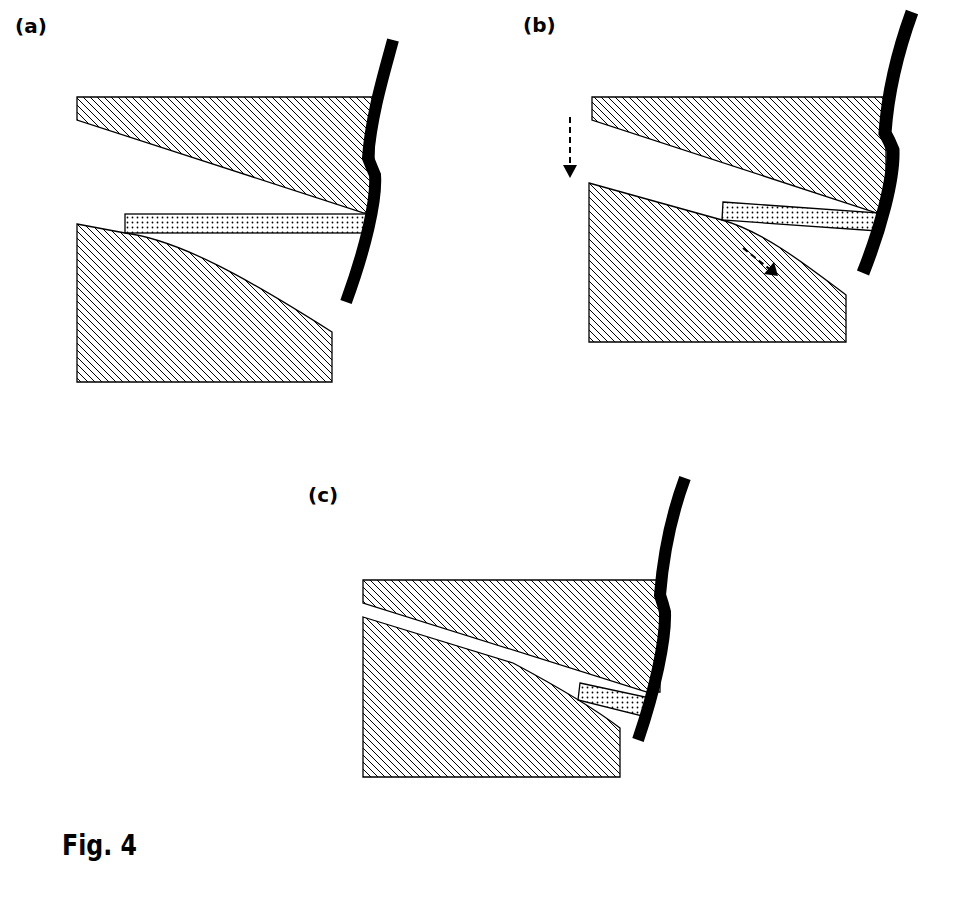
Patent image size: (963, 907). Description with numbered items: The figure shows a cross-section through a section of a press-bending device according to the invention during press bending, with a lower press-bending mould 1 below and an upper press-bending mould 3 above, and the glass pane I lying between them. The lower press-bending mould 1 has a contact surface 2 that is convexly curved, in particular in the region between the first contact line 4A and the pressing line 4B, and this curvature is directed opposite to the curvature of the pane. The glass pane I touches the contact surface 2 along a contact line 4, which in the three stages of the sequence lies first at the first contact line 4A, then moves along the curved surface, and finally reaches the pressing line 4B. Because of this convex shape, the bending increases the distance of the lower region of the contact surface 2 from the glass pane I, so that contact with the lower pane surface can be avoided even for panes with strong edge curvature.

The lower press-bending mould 1 is at (323, 333).
The contact surface 2 is at (96, 222).
The upper press-bending mould 3 is at (315, 115).
The contact line 4 is at (127, 240).
The first contact line 4A is at (640, 210).
The pressing line 4B is at (577, 708).
The glass pane I is at (145, 215).